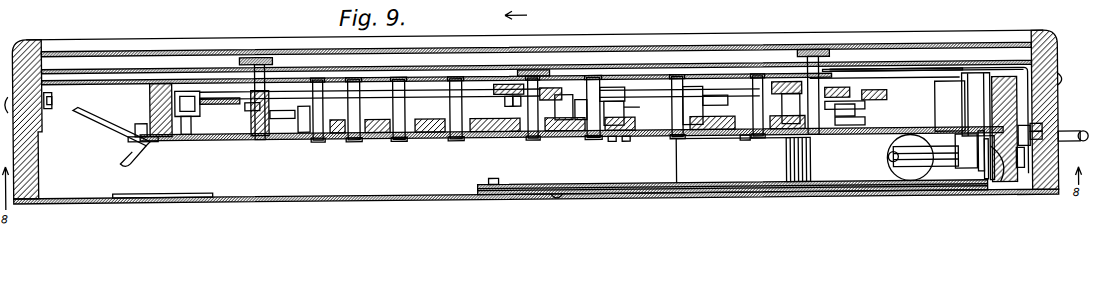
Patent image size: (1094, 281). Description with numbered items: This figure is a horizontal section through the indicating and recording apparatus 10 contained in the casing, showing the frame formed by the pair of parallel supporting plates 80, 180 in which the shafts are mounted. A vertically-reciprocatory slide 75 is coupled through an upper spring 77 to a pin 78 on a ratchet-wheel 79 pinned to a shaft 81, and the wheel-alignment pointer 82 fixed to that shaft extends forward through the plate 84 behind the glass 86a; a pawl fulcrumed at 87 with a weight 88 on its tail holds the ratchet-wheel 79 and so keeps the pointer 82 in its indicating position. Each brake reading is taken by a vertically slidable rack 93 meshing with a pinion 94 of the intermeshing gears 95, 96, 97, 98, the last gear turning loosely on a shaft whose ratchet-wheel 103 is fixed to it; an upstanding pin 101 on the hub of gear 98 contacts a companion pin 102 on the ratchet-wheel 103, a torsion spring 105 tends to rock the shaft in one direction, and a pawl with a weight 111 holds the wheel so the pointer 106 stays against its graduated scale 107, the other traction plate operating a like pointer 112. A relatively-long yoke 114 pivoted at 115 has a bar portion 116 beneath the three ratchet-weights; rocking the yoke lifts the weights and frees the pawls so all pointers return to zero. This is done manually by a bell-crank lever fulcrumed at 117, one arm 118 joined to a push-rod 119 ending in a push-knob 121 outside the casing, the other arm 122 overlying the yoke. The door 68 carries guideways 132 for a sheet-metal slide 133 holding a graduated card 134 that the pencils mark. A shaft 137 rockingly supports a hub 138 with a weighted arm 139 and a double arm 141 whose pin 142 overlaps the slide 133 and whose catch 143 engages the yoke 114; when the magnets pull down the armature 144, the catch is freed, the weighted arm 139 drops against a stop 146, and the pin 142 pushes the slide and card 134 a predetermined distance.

The apparatus 10 is at (516, 20).
The hinged door 68 is at (396, 198).
The vertically-reciprocatory slide 75 is at (505, 132).
The upper spring 77 is at (518, 100).
The pin 78 is at (505, 99).
The ratchet-wheel 79 is at (504, 78).
The supporting plate 80 is at (715, 77).
The shaft 81 is at (560, 90).
The wheel-alignment pointer 82 is at (535, 72).
The plate 84 is at (636, 66).
The glass 86a is at (930, 47).
The pawl fulcrum 87 is at (585, 100).
The weight 88 is at (625, 106).
The vertically slidable rack 93 is at (490, 140).
The pinion 94 is at (452, 140).
The gear 95 is at (355, 140).
The gear 96 is at (318, 140).
The gear 97 is at (748, 140).
The gear 98 is at (258, 138).
The upstanding pin 101 is at (283, 132).
The companion pin 102 is at (305, 132).
The ratchet-wheel 103 is at (235, 120).
The torsion spring 105 is at (812, 54).
The pointer 106 is at (795, 62).
The graduated scale 107 is at (835, 70).
The weight 111 is at (738, 98).
The pointer 112 is at (258, 56).
The yoke 114 is at (978, 85).
The yoke pivot 115 is at (196, 112).
The bar portion 116 is at (432, 90).
The bell-crank fulcrum 117 is at (1022, 173).
The bell-crank arm 118 is at (1045, 130).
The push-rod 119 is at (1046, 138).
The push-knob 121 is at (1083, 146).
The bell-crank arm 122 is at (1024, 152).
The guideway 132 is at (862, 176).
The sheet-metal slide 133 is at (812, 190).
The graduated card 134 is at (612, 183).
The shaft 137 is at (972, 112).
The hub 138 is at (1003, 186).
The weighted arm 139 is at (915, 140).
The double arm 141 is at (991, 186).
The pin 142 is at (985, 183).
The catch 143 is at (910, 149).
The armature 144 is at (893, 158).
The stop 146 is at (700, 166).
The supporting plate 180 is at (640, 138).